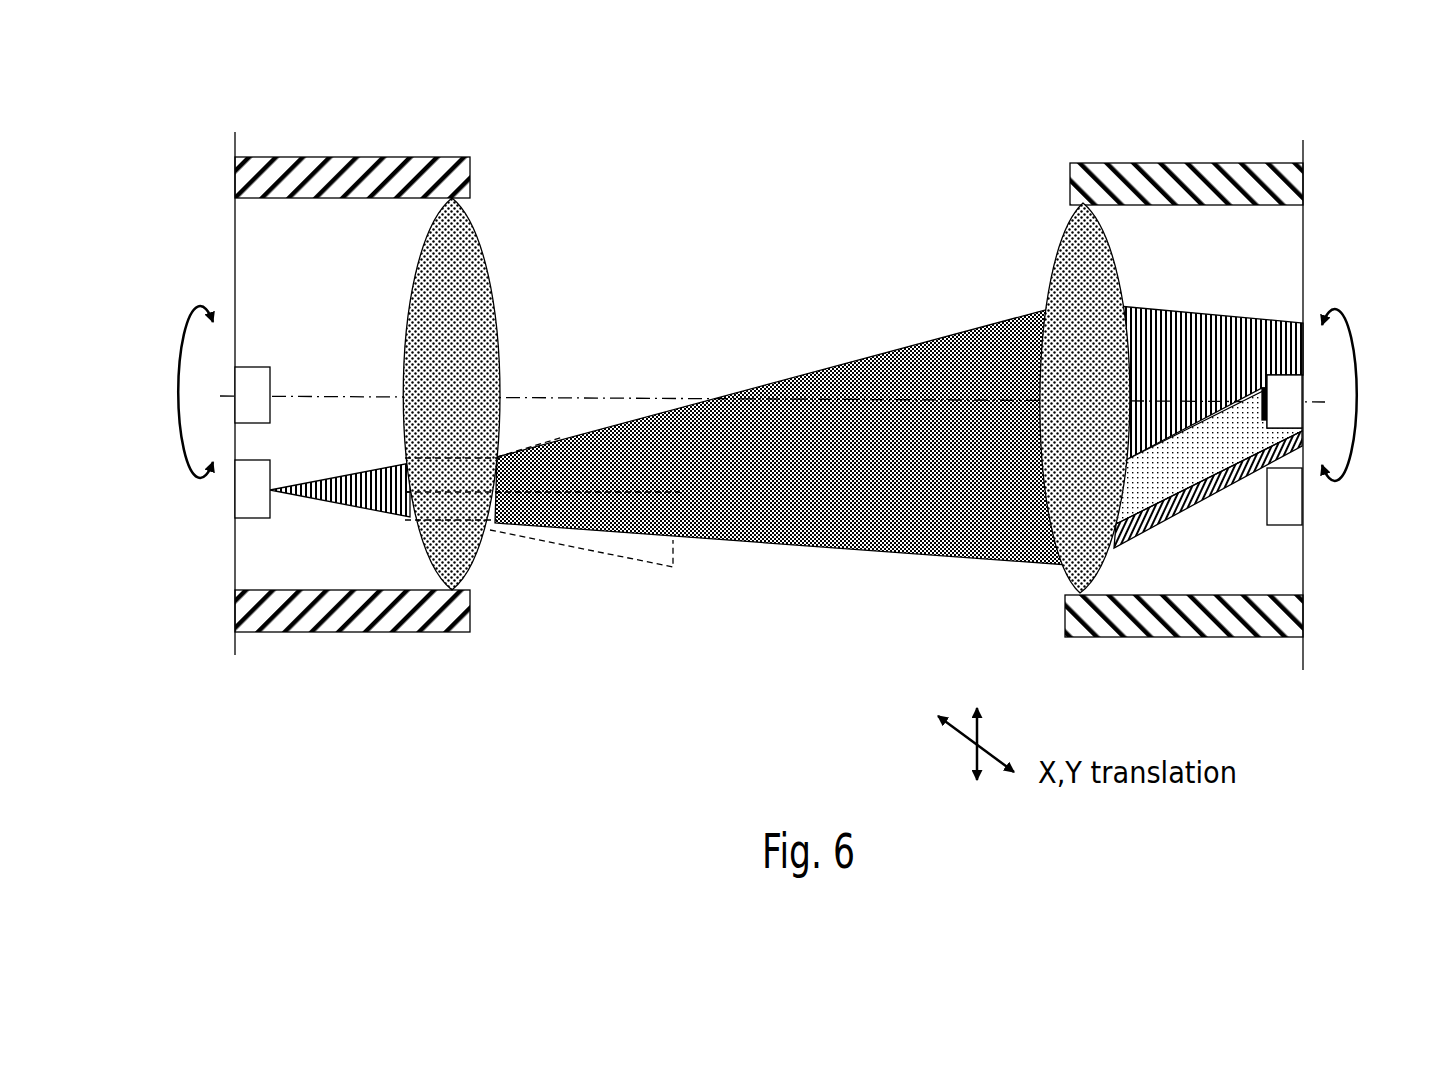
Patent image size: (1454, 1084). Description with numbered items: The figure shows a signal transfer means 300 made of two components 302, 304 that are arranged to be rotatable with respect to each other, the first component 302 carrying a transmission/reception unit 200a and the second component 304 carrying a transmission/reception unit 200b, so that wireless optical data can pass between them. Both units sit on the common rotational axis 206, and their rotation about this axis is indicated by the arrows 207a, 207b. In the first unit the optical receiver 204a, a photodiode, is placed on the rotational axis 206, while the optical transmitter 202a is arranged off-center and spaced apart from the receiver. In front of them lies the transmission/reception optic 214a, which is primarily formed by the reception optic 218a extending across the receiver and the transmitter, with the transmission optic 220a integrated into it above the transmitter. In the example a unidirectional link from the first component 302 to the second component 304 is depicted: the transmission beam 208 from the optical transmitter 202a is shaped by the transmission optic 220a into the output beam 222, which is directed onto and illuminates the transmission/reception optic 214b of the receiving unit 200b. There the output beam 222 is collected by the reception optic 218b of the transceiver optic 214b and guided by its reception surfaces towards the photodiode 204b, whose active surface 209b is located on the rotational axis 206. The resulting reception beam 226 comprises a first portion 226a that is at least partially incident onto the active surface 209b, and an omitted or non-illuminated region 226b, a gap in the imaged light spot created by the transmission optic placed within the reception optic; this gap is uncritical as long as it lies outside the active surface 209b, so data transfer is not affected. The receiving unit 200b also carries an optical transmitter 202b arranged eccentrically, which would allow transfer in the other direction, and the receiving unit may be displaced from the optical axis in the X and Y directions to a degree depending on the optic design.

The signal transfer means 300 is at (276, 356).
The transmission/reception unit 200a is at (294, 233).
The first component 302 is at (228, 220).
The optical receiver 204a is at (252, 367).
The arrow 207a is at (178, 427).
The optical transmitter 202a is at (240, 507).
The transmission beam 208 is at (338, 503).
The transmission/reception optic 214a is at (490, 357).
The reception optic 218a is at (515, 394).
The transmission optic 220a is at (427, 537).
The rotational axis 206 is at (678, 396).
The output beam 222 is at (982, 347).
The reception optic 218b is at (1138, 353).
The transmission/reception optic 214b is at (1127, 377).
The transmission/reception unit 200b is at (1233, 230).
The reception beam 226 is at (1268, 377).
The first portion 226a is at (1197, 313).
The omitted region 226b is at (1197, 463).
The active surface 209b is at (1262, 392).
The photodiode 204b is at (1284, 401).
The arrow 207b is at (1358, 450).
The optical transmitter 202b is at (1290, 516).
The second component 304 is at (1308, 586).